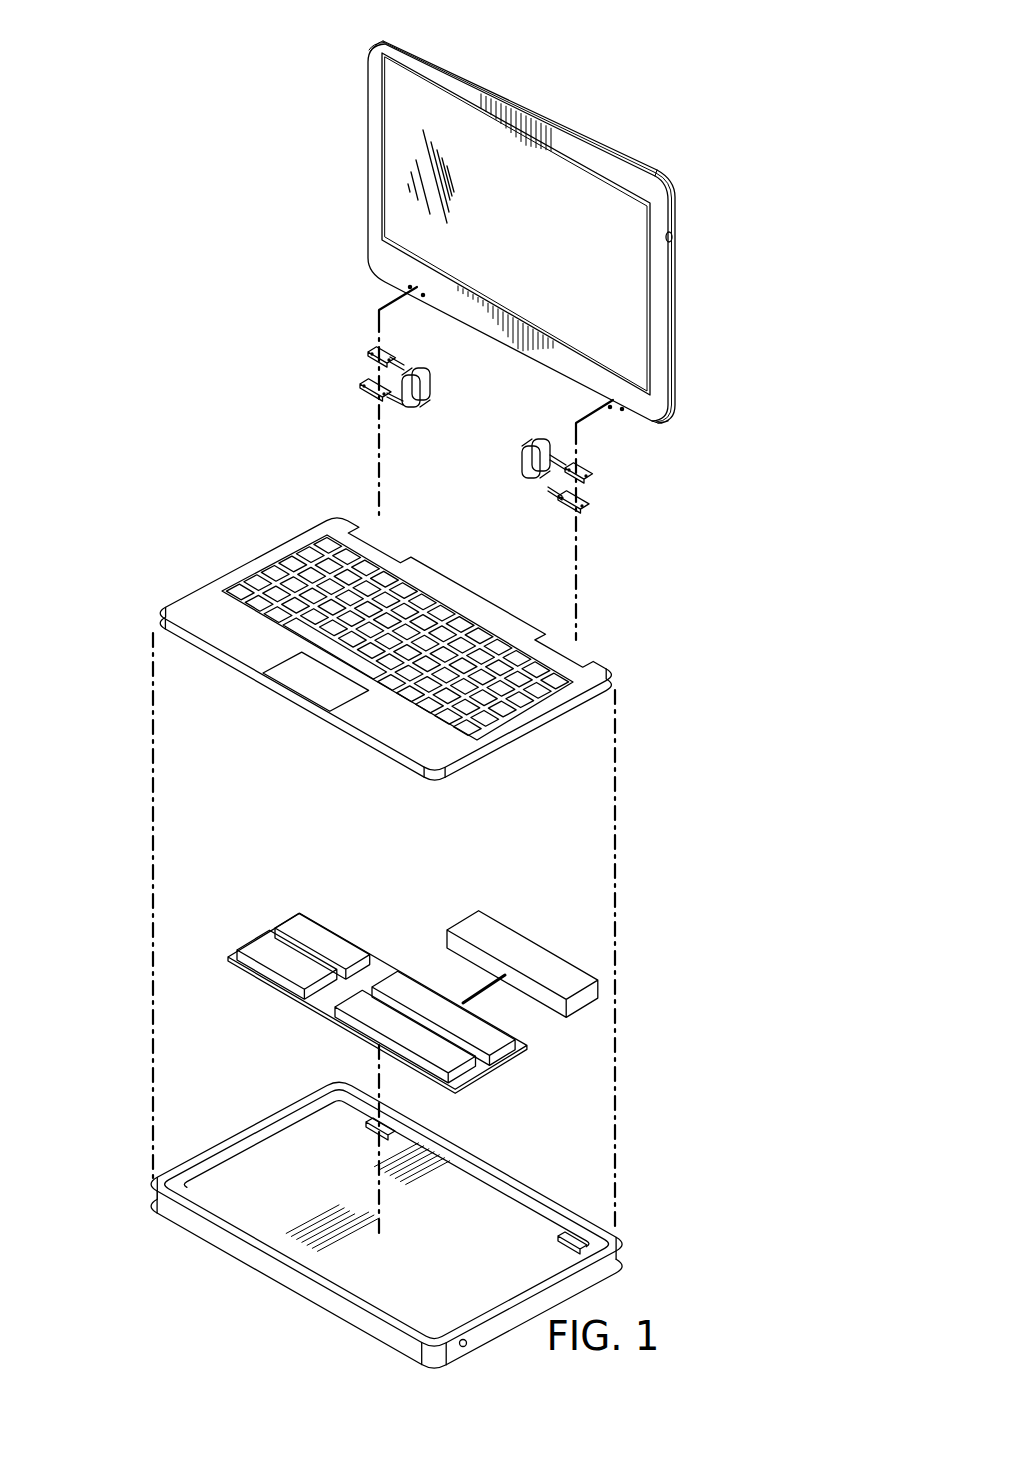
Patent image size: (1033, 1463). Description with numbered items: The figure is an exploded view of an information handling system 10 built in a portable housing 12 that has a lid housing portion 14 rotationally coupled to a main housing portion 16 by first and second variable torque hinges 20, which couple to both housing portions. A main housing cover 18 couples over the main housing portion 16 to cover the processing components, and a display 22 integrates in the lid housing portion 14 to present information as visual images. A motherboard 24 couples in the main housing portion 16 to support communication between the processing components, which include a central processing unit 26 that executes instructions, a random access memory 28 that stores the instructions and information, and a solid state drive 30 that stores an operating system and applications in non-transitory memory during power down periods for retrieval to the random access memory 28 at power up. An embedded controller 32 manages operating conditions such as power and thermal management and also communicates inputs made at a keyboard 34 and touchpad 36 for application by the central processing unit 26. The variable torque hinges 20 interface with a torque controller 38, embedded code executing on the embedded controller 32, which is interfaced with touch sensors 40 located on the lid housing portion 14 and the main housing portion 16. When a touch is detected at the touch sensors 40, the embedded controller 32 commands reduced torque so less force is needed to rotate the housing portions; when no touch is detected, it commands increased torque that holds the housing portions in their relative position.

The information handling system 10 is at (255, 116).
The housing 12 is at (245, 1325).
The lid housing portion 14 is at (603, 145).
The main housing portion 16 is at (664, 1241).
The main housing cover 18 is at (188, 603).
The variable torque hinge 20 is at (632, 488).
The display 22 is at (500, 241).
The motherboard 24 is at (270, 985).
The central processing unit 26 is at (260, 942).
The random access memory 28 is at (455, 1062).
The solid state drive 30 is at (312, 923).
The embedded controller 32 is at (403, 980).
The keyboard 34 is at (440, 615).
The touchpad 36 is at (322, 697).
The torque controller 38 is at (493, 930).
The touch sensor 40 is at (463, 1339).